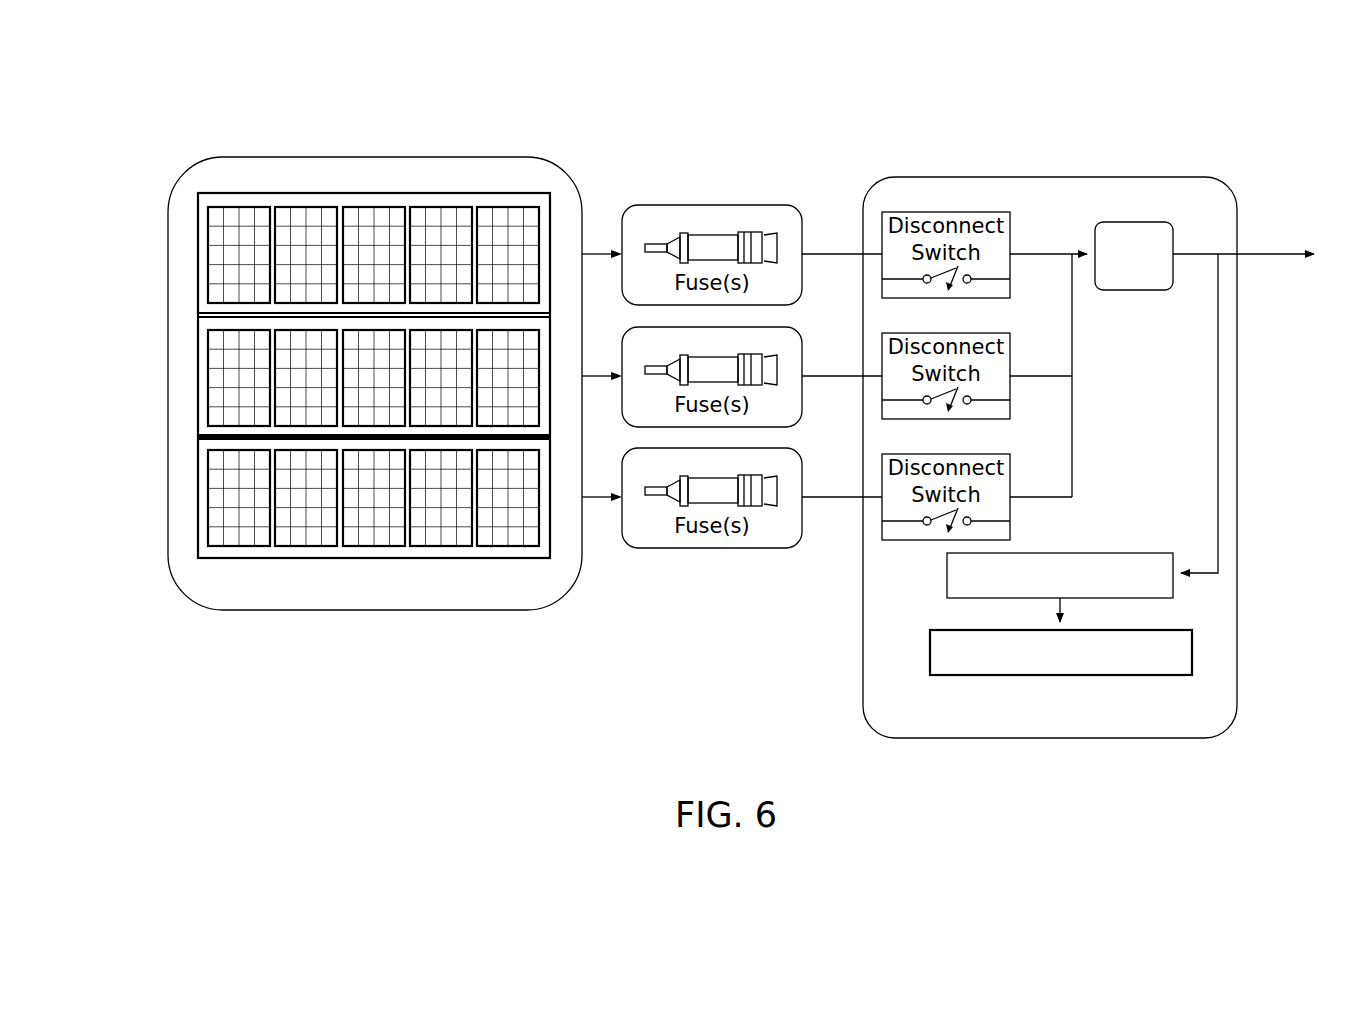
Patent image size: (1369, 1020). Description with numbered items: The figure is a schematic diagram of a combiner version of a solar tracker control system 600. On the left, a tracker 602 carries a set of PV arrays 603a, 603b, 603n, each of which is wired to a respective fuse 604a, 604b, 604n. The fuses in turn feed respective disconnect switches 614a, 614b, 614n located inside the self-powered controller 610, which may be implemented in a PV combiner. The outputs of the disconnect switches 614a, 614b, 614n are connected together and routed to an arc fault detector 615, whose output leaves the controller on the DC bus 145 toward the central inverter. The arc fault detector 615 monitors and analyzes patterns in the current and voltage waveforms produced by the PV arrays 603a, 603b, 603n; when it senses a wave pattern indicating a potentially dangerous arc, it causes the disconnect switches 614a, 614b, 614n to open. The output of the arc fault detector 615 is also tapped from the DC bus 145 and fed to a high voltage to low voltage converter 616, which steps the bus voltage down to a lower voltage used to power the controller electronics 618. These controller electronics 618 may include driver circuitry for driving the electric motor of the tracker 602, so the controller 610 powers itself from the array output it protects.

The solar tracker control system 600 is at (286, 96).
The tracker 602 is at (373, 610).
The PV array 603a is at (198, 256).
The PV array 603b is at (198, 378).
The PV array 603n is at (198, 499).
The fuse 604a is at (712, 205).
The fuse 604b is at (803, 341).
The fuse 604n is at (712, 548).
The self-powered controller 610 is at (1047, 177).
The disconnect switch 614a is at (930, 212).
The disconnect switch 614b is at (1013, 352).
The disconnect switch 614n is at (907, 541).
The arc fault detector 615 is at (1133, 290).
The high voltage to low voltage converter 616 is at (1133, 553).
The controller electronics 618 is at (1192, 643).
The DC bus 145 is at (1273, 256).